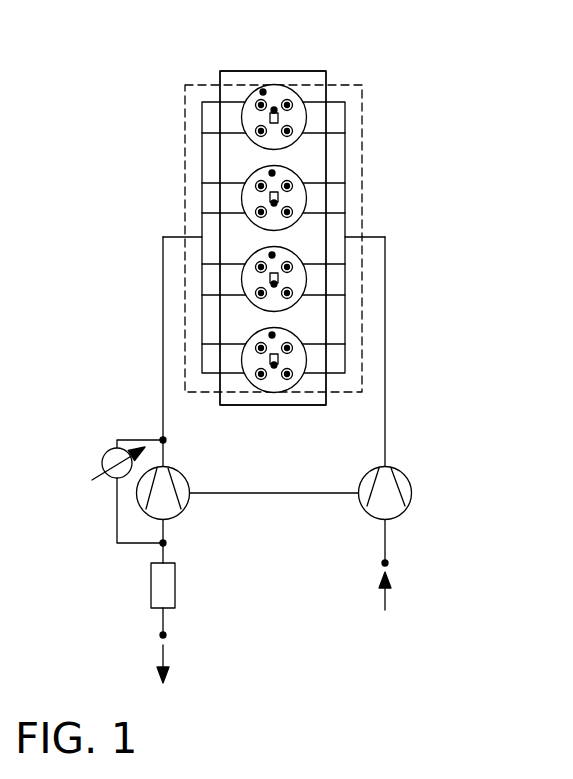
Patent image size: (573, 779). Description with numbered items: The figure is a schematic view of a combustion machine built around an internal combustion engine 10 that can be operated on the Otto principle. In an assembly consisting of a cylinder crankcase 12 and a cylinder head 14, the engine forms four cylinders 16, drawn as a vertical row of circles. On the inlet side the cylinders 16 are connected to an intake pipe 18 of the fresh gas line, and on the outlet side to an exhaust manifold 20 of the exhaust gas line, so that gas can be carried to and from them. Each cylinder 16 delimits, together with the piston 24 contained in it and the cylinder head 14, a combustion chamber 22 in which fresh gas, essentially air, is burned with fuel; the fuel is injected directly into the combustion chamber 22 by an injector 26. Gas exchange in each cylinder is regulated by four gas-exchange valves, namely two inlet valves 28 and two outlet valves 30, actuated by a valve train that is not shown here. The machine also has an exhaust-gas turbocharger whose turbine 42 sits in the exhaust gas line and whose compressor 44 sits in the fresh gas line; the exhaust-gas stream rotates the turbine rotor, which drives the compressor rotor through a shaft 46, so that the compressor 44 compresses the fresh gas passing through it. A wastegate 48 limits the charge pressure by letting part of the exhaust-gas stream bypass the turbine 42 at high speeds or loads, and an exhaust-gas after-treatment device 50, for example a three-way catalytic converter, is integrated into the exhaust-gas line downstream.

The internal combustion engine 10 is at (340, 63).
The cylinder crankcase 12 is at (208, 222).
The cylinder head 14 is at (233, 79).
The cylinder 16 is at (389, 196).
The intake pipe 18 is at (362, 88).
The exhaust manifold 20 is at (185, 92).
The combustion chamber 22 is at (291, 74).
The piston 24 is at (263, 92).
The injector 26 is at (274, 110).
The inlet valve 28 is at (292, 105).
The outlet valve 30 is at (256, 105).
The turbine 42 is at (155, 499).
The compressor 44 is at (385, 492).
The shaft 46 is at (276, 492).
The wastegate 48 is at (104, 430).
The exhaust-gas after-treatment device 50 is at (152, 590).